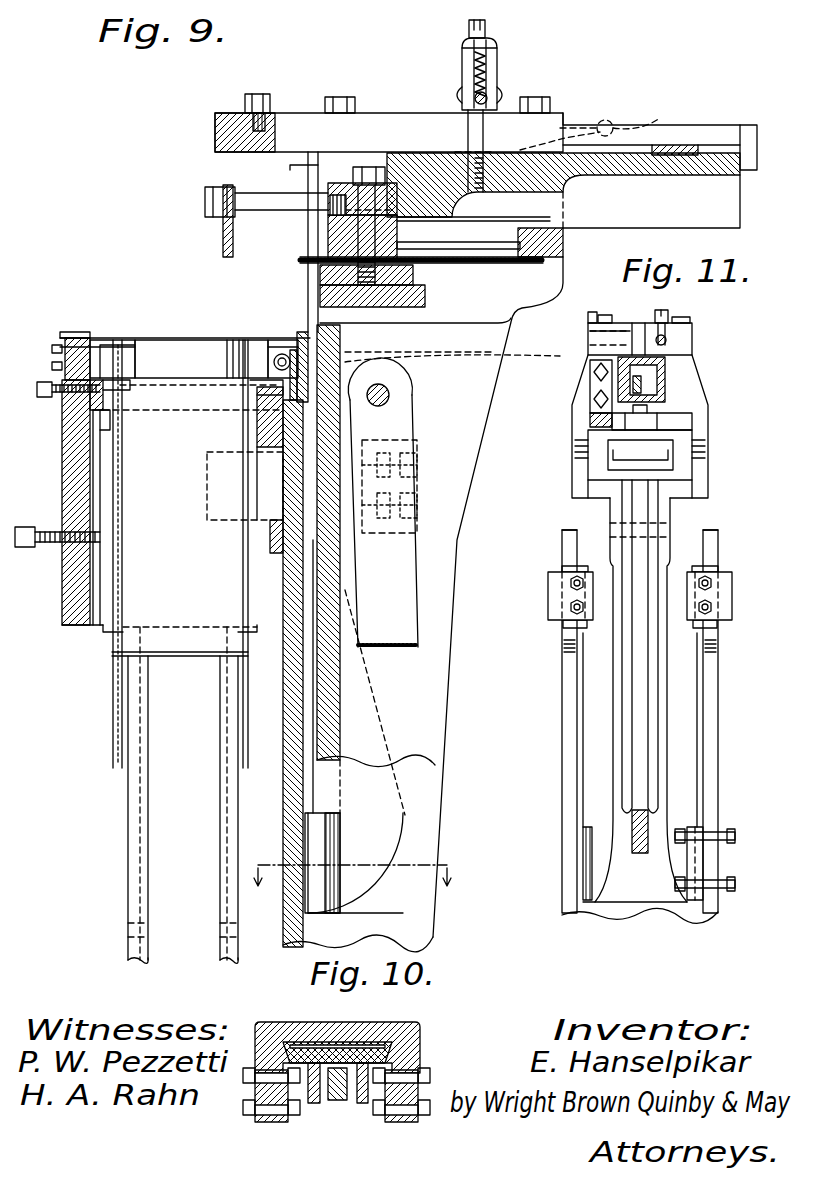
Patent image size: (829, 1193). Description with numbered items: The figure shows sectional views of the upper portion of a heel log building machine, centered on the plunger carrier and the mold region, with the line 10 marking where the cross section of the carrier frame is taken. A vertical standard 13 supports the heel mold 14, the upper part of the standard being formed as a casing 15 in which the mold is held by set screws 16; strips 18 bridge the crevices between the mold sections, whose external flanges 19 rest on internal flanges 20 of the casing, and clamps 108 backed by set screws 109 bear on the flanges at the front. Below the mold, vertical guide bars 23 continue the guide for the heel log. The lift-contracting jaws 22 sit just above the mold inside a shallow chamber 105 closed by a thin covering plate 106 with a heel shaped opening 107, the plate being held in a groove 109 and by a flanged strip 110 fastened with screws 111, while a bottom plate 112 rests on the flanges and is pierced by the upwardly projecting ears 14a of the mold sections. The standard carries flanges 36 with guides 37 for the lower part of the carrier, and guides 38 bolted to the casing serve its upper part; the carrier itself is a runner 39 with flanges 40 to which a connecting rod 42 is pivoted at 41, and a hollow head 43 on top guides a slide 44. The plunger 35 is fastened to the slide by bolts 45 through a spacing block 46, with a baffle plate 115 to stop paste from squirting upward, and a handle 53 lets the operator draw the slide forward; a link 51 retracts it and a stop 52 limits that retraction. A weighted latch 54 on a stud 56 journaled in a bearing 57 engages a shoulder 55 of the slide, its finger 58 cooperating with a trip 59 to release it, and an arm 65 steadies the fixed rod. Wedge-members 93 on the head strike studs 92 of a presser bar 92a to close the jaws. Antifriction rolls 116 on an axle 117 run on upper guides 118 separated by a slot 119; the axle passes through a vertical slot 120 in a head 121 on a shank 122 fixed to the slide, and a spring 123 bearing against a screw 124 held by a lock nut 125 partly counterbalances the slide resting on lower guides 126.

In FIG. 9, the section line 10 is at (356, 864).
In FIG. 9, the vertical standard 13 is at (290, 915).
In FIG. 11, the vertical standard 13 is at (645, 905).
In FIG. 10, the vertical standard 13 is at (328, 1022).
In FIG. 9, the heel mold 14 is at (188, 520).
In FIG. 9, the upwardly projecting ears 14a is at (125, 345).
In FIG. 9, the casing 15 is at (75, 612).
In FIG. 9, the set screws 16 is at (40, 548).
In FIG. 9, the strips 18 is at (243, 444).
In FIG. 9, the external flanges 19 is at (115, 394).
In FIG. 9, the internal flanges 20 is at (108, 420).
In FIG. 9, the lift-contracting jaws 22 is at (216, 359).
In FIG. 9, the vertical guide bars 23 is at (128, 857).
In FIG. 9, the plunger 35 is at (426, 300).
In FIG. 11, the plunger 35 is at (672, 462).
In FIG. 11, the flanges 36 is at (565, 793).
In FIG. 10, the flanges 36 is at (265, 1122).
In FIG. 11, the guides 37 is at (700, 862).
In FIG. 10, the guides 37 is at (283, 1052).
In FIG. 11, the guides 38 is at (572, 575).
In FIG. 10, the runner 39 is at (300, 1042).
In FIG. 9, the flanges 40 is at (415, 712).
In FIG. 11, the flanges 40 is at (620, 752).
In FIG. 10, the flanges 40 is at (314, 1105).
In FIG. 9, the pivot 41 is at (388, 398).
In FIG. 11, the pivot 41 is at (680, 530).
In FIG. 9, the connecting rod 42 is at (405, 583).
In FIG. 11, the connecting rod 42 is at (640, 853).
In FIG. 10, the connecting rod 42 is at (338, 1102).
In FIG. 9, the hollow head 43 is at (510, 300).
In FIG. 11, the hollow head 43 is at (700, 452).
In FIG. 9, the slide 44 is at (563, 190).
In FIG. 11, the slide 44 is at (665, 380).
In FIG. 9, the bolts 45 is at (368, 185).
In FIG. 9, the spacing block 46 is at (328, 240).
In FIG. 11, the link 51 is at (645, 392).
In FIG. 9, the stop 52 is at (746, 160).
In FIG. 9, the handle 53 is at (205, 226).
In FIG. 9, the weighted latch 54 is at (579, 122).
In FIG. 11, the weighted latch 54 is at (590, 338).
In FIG. 9, the shoulder 55 is at (688, 145).
In FIG. 9, the stud 56 is at (612, 122).
In FIG. 11, the stud 56 is at (620, 340).
In FIG. 11, the bearing 57 is at (605, 348).
In FIG. 11, the finger 58 is at (662, 322).
In FIG. 9, the trip 59 is at (342, 338).
In FIG. 11, the trip 59 is at (598, 707).
In FIG. 11, the arm 65 is at (592, 420).
In FIG. 9, the studs 92 is at (395, 358).
In FIG. 9, the presser bar 92a is at (300, 345).
In FIG. 9, the wedge-members 93 is at (310, 272).
In FIG. 9, the shallow chamber 105 is at (100, 345).
In FIG. 9, the covering plate 106 is at (118, 340).
In FIG. 9, the heel shaped opening 107 is at (215, 340).
In FIG. 9, the clamps 108 is at (68, 436).
In FIG. 9, the groove 109 is at (303, 332).
In FIG. 9, the flanged strip 110 is at (72, 332).
In FIG. 9, the screws 111 is at (52, 348).
In FIG. 9, the bottom plate 112 is at (52, 366).
In FIG. 9, the baffle plate 115 is at (497, 265).
In FIG. 11, the baffle plate 115 is at (680, 428).
In FIG. 9, the antifriction rolls 116 is at (460, 92).
In FIG. 9, the axle 117 is at (486, 96).
In FIG. 9, the upper guides 118 is at (378, 113).
In FIG. 9, the slot 119 is at (305, 120).
In FIG. 9, the vertical slot 120 is at (495, 72).
In FIG. 9, the head 121 is at (464, 62).
In FIG. 9, the shank 122 is at (468, 140).
In FIG. 9, the spring 123 is at (490, 46).
In FIG. 9, the screw 124 is at (470, 24).
In FIG. 9, the lock nut 125 is at (462, 44).
In FIG. 9, the lower guides 126 is at (555, 262).